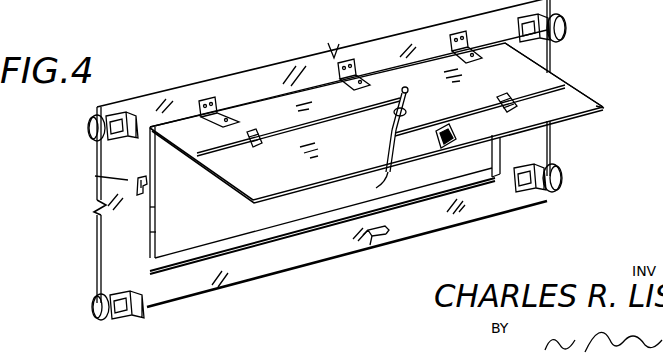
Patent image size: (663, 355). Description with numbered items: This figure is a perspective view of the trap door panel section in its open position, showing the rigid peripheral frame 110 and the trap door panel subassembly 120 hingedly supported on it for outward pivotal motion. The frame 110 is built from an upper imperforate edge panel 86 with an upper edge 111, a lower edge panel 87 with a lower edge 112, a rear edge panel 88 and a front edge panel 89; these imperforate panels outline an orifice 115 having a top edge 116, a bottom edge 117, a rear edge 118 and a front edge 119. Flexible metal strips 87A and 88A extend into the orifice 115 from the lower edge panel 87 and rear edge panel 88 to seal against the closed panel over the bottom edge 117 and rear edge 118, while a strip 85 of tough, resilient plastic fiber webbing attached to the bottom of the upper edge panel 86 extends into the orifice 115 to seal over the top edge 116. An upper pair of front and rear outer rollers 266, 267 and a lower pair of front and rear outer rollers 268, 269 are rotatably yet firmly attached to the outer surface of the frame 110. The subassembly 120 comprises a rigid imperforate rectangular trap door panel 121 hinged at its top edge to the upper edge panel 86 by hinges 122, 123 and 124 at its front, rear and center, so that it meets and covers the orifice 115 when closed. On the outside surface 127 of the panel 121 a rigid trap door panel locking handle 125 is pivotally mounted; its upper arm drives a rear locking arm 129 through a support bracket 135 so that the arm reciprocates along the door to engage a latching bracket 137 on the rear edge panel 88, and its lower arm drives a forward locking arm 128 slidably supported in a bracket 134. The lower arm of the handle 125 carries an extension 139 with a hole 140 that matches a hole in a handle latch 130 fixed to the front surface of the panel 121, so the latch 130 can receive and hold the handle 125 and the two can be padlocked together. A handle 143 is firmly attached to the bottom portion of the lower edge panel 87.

The strip 85 is at (154, 144).
The upper imperforate edge panel 86 is at (292, 56).
The lower edge panel 87 is at (327, 249).
The metal strip 87A is at (265, 236).
The rear edge panel 88 is at (95, 176).
The metal strip 88A is at (150, 234).
The front edge panel 89 is at (549, 61).
The rigid peripheral frame 110 is at (98, 159).
The upper edge 111 is at (149, 99).
The lower edge 112 is at (476, 219).
The orifice 115 is at (186, 207).
The top edge 116 is at (273, 100).
The bottom edge 117 is at (410, 214).
The rear edge 118 is at (151, 208).
The front edge 119 is at (496, 166).
The trap door panel subassembly 120 is at (612, 110).
The trap door panel 121 is at (458, 105).
The hinge 122 is at (478, 32).
The hinge 123 is at (223, 97).
The hinge 124 is at (369, 60).
The trap door panel locking handle 125 is at (418, 82).
The outside surface 127 is at (575, 97).
The forward locking arm 128 is at (486, 98).
The rear panel locking arm 129 is at (358, 123).
The handle latch 130 is at (455, 124).
The front trap door locking arm support bracket 134 is at (518, 106).
The rear trap door locking arm support bracket 135 is at (282, 148).
The rear trap door panel latch 137 is at (146, 184).
The extension 139 is at (380, 176).
The hole 140 is at (380, 159).
The handle 143 is at (370, 246).
The upper front outer roller 266 is at (567, 20).
The upper rear outer roller 267 is at (89, 126).
The lower front outer roller 268 is at (556, 198).
The lower rear outer roller 269 is at (100, 322).